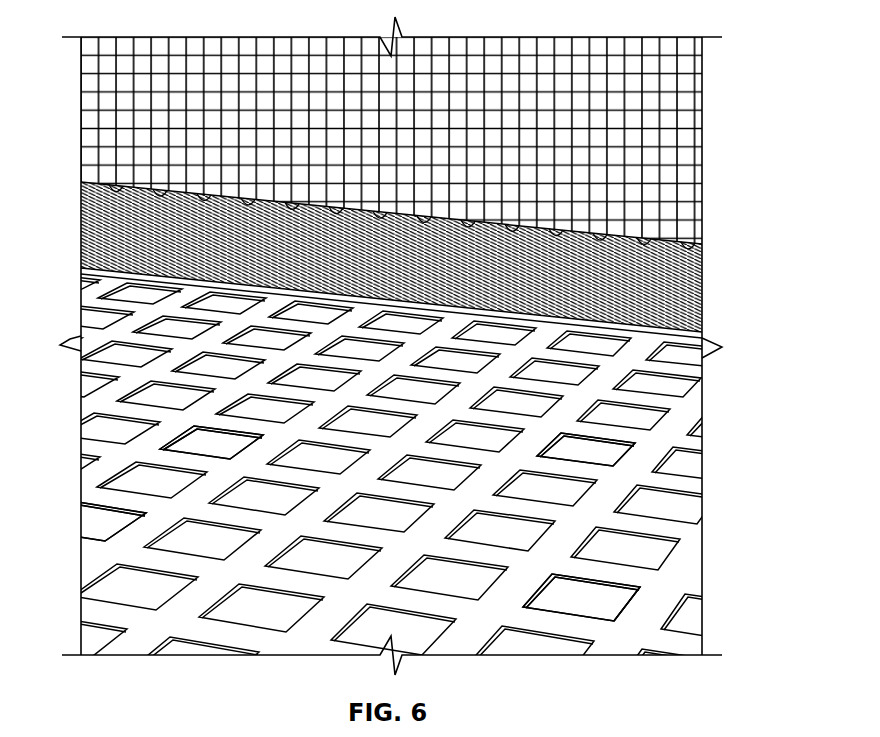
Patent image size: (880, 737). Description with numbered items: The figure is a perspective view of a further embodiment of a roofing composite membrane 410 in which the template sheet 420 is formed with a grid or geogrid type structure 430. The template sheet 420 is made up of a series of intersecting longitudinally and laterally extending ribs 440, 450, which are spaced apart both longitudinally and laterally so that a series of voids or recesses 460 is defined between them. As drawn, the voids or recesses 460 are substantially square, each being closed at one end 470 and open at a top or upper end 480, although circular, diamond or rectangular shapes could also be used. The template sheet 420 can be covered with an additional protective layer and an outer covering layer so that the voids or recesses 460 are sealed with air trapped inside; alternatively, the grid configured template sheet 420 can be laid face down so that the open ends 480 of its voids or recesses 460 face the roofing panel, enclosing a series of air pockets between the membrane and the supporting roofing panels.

The roofing composite membrane 410 is at (722, 450).
The template sheet 420 is at (687, 565).
The grid or geogrid type structure 430 is at (658, 593).
The longitudinally extending rib 440 is at (125, 542).
The laterally extending rib 450 is at (170, 458).
The void or recess 460 is at (600, 456).
The closed end 470 is at (588, 600).
The open top or upper end 480 is at (633, 605).